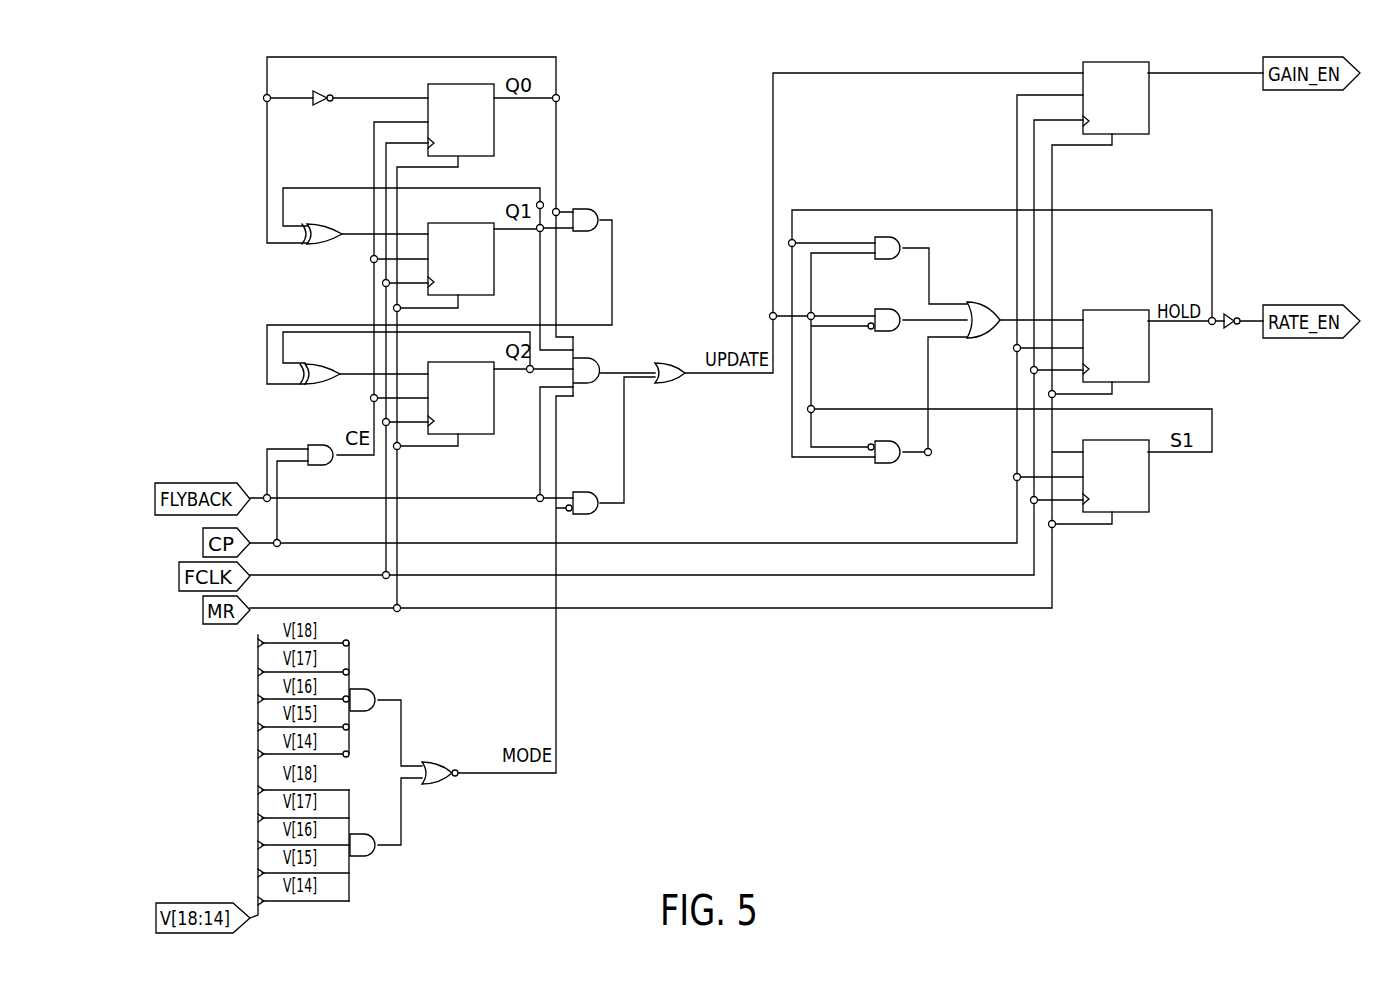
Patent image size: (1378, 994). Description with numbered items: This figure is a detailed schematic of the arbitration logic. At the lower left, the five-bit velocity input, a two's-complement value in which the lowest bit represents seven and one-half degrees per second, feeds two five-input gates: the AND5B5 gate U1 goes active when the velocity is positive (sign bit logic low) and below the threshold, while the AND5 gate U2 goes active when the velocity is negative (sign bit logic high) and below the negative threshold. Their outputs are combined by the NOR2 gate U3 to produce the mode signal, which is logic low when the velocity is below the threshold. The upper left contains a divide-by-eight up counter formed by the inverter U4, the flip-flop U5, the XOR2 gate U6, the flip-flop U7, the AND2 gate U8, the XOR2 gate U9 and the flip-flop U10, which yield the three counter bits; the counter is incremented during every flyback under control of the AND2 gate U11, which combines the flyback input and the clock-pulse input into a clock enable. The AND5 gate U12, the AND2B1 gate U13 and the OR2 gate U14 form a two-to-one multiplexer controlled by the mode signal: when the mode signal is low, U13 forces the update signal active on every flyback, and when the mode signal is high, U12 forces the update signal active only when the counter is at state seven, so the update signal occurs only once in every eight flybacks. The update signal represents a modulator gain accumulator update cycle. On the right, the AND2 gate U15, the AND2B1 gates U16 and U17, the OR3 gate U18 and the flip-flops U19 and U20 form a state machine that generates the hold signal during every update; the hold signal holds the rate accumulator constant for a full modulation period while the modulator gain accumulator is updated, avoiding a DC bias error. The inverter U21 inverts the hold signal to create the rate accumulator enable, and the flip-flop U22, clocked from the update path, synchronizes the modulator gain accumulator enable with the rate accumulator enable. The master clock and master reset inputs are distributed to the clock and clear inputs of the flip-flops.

The AND5B5 gate U1 is at (366, 724).
The AND5 gate U2 is at (353, 869).
The NOR2 gate U3 is at (437, 775).
The inverter U4 is at (328, 101).
The FDCE flip-flop U5 is at (462, 121).
The XOR2 gate U6 is at (322, 236).
The FDCE flip-flop U7 is at (462, 260).
The AND2 gate U8 is at (587, 222).
The XOR2 gate U9 is at (322, 378).
The FDCE flip-flop U10 is at (462, 398).
The AND2 gate U11 is at (321, 457).
The AND5 gate U12 is at (591, 379).
The AND2B1 gate U13 is at (597, 504).
The OR2 gate U14 is at (672, 374).
The AND2 gate U15 is at (890, 249).
The AND2B1 gate U16 is at (891, 323).
The AND2B1 gate U17 is at (891, 454).
The OR3 gate U18 is at (990, 324).
The FDCE flip-flop U19 is at (1117, 346).
The FDCE flip-flop U20 is at (1117, 476).
The inverter U21 is at (1243, 323).
The FDCE flip-flop U22 is at (1117, 98).